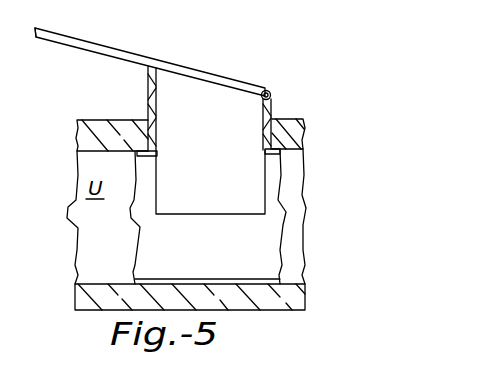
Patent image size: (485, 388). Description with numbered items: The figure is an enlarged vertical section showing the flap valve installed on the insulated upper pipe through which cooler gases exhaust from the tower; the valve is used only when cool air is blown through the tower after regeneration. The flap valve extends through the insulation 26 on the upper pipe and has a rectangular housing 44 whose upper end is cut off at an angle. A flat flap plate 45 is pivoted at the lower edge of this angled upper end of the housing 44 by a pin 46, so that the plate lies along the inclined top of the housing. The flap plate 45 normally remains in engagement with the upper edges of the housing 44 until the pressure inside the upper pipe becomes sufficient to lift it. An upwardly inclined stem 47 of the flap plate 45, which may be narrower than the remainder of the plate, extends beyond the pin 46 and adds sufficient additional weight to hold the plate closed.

The insulation 26 is at (75, 132).
The rectangular housing 44 is at (157, 127).
The flap plate 45 is at (230, 58).
The pin 46 is at (270, 92).
The stem 47 is at (64, 43).